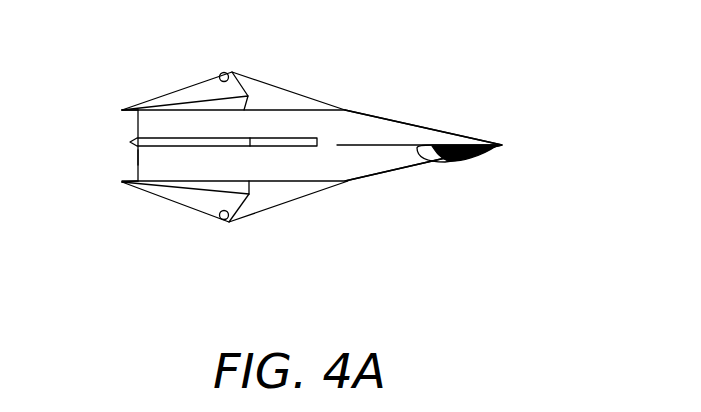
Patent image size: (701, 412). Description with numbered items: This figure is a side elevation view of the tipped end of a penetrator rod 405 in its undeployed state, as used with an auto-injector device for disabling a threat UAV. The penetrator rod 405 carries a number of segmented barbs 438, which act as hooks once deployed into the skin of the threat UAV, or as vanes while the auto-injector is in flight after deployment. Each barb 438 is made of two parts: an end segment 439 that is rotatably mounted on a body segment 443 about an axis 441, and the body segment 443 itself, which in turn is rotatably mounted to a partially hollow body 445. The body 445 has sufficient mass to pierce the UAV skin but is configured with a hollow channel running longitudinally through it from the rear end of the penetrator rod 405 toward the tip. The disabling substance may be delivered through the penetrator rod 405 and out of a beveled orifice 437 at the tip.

The penetrator rod 405 is at (457, 248).
The beveled orifice 437 is at (453, 158).
The segmented barb 438 is at (147, 83).
The end segment 439 is at (172, 97).
The axis 441 is at (221, 75).
The body segment 443 is at (278, 93).
The partially hollow body 445 is at (345, 122).